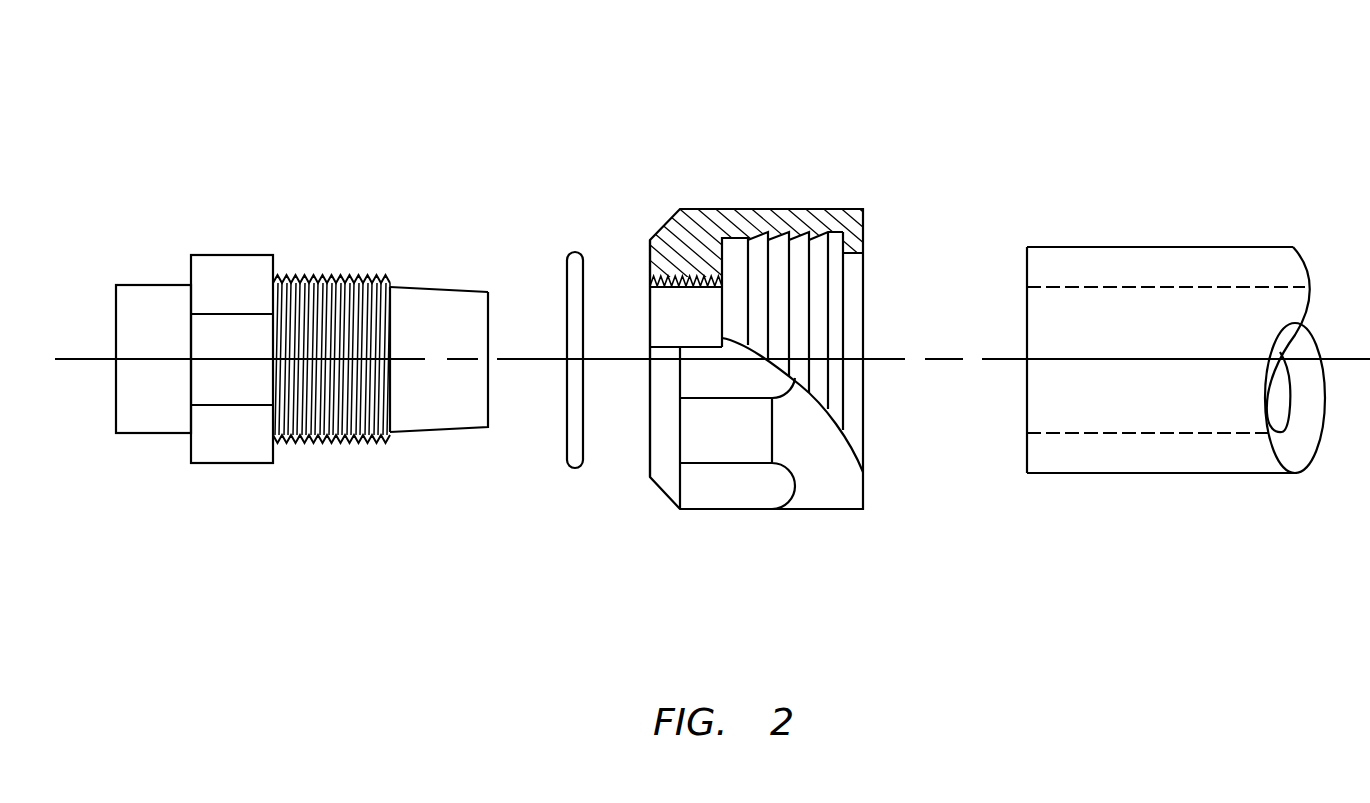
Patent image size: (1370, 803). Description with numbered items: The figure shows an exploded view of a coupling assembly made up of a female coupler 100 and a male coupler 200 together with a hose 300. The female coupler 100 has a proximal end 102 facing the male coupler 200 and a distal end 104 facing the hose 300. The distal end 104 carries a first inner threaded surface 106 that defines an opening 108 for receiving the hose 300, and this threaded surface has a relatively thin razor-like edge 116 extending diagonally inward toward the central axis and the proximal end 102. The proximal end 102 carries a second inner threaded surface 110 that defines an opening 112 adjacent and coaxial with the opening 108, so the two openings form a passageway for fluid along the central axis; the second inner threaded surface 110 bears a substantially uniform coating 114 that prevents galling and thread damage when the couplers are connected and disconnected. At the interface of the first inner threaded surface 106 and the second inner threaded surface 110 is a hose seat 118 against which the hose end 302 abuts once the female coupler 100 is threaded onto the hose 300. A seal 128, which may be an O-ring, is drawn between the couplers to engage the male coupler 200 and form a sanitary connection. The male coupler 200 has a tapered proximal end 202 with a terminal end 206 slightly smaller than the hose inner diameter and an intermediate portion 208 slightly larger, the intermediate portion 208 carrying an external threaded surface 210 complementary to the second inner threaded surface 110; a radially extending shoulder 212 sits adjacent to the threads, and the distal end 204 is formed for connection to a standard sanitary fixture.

The female coupler 100 is at (825, 80).
The proximal end 102 is at (677, 508).
The distal end 104 is at (843, 512).
The first inner threaded surface 106 is at (820, 230).
The opening 108 is at (867, 268).
The second inner threaded surface 110 is at (687, 243).
The opening 112 is at (650, 462).
The coating 114 is at (660, 272).
The razor-like edge 116 is at (787, 230).
The hose seat 118 is at (728, 233).
The seal 128 is at (572, 466).
The male coupler 200 is at (210, 190).
The proximal end 202 is at (487, 425).
The distal end 204 is at (148, 435).
The terminal end 206 is at (485, 288).
The intermediate portion 208 is at (402, 285).
The external threaded surface 210 is at (345, 443).
The radially extending shoulder 212 is at (272, 465).
The hose 300 is at (1140, 247).
The hose end 302 is at (1026, 457).